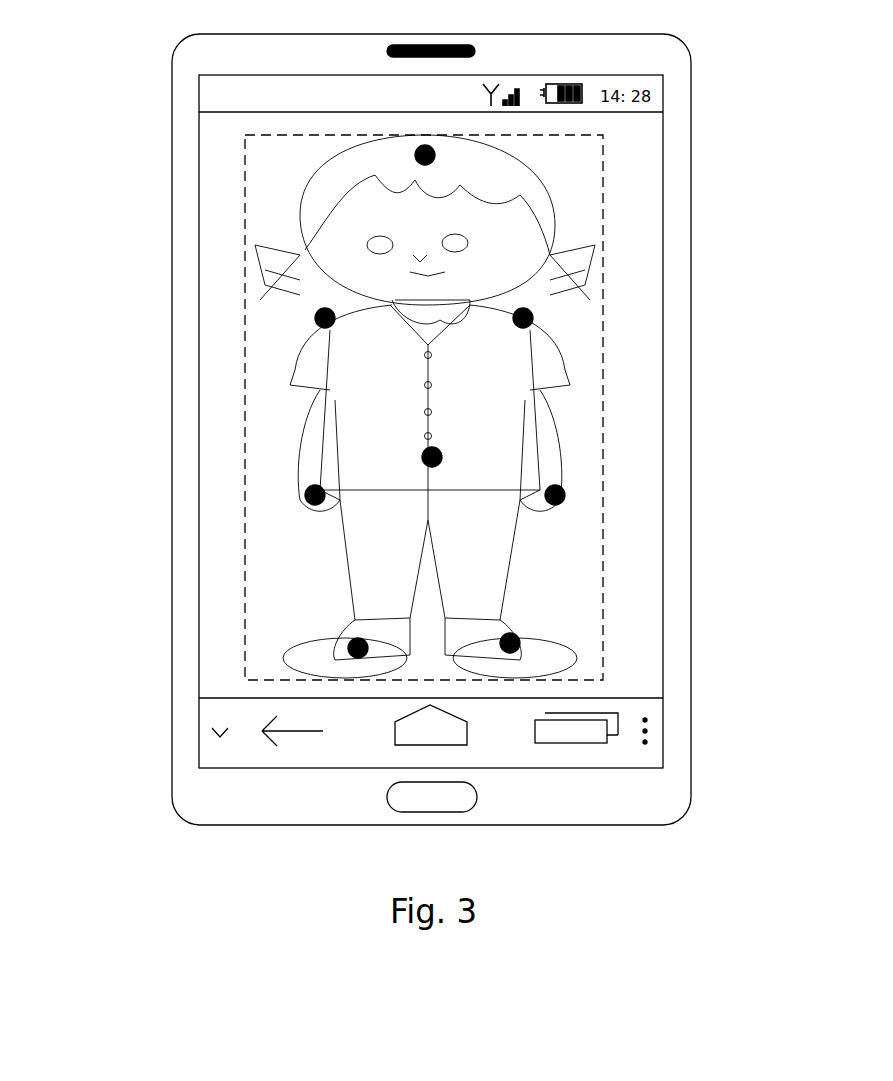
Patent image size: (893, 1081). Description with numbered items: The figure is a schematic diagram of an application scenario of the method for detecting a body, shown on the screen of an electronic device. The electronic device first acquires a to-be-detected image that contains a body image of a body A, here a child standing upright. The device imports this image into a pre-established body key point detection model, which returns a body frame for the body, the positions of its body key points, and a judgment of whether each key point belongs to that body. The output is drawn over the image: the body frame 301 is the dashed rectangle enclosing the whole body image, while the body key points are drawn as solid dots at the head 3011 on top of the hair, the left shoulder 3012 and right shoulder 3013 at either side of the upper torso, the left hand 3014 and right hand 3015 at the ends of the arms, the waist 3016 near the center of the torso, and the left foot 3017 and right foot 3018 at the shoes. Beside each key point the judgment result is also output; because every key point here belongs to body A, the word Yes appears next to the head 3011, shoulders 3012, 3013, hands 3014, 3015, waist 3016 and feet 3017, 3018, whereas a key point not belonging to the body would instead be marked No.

The body frame 301 is at (603, 202).
The head 3011 is at (418, 152).
The left shoulder 3012 is at (533, 316).
The right shoulder 3013 is at (318, 317).
The left hand 3014 is at (565, 493).
The right hand 3015 is at (307, 494).
The waist 3016 is at (424, 455).
The left foot 3017 is at (520, 640).
The right foot 3018 is at (350, 646).